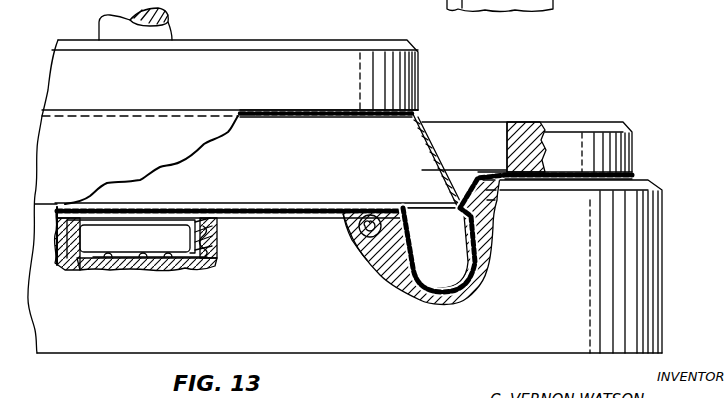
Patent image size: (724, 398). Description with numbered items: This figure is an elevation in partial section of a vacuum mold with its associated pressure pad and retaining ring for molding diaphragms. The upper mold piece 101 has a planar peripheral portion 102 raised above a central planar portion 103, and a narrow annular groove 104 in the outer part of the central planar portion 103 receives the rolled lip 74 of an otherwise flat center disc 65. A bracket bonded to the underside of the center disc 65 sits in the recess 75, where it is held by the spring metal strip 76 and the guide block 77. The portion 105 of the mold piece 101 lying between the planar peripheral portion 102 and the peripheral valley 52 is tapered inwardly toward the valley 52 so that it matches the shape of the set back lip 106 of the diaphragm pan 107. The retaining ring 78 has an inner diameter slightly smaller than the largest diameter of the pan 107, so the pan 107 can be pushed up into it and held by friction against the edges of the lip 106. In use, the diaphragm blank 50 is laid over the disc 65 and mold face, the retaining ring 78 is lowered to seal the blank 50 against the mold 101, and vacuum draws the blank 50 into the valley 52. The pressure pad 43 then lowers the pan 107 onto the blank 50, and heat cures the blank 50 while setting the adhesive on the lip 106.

The pressure pad 43 is at (217, 88).
The diaphragm blank 50 is at (634, 172).
The peripheral valley 52 is at (460, 281).
The center disc 65 is at (214, 256).
The rolled lip 74 is at (374, 220).
The recess 75 is at (219, 256).
The spring metal strip 76 is at (148, 258).
The guide block 77 is at (72, 242).
The retaining ring 78 is at (587, 124).
The upper mold piece 101 is at (212, 321).
The planar peripheral portion 102 is at (549, 178).
The central planar portion 103 is at (312, 218).
The annular groove 104 is at (356, 238).
The tapered portion 105 is at (477, 204).
The set back lip 106 is at (463, 190).
The diaphragm pan 107 is at (100, 161).